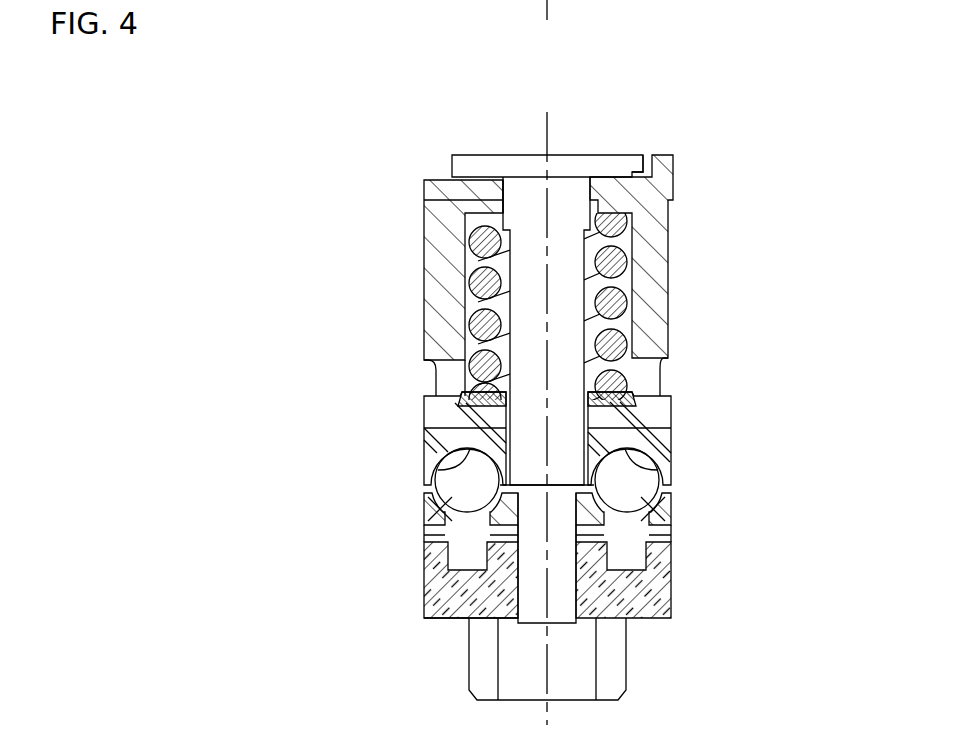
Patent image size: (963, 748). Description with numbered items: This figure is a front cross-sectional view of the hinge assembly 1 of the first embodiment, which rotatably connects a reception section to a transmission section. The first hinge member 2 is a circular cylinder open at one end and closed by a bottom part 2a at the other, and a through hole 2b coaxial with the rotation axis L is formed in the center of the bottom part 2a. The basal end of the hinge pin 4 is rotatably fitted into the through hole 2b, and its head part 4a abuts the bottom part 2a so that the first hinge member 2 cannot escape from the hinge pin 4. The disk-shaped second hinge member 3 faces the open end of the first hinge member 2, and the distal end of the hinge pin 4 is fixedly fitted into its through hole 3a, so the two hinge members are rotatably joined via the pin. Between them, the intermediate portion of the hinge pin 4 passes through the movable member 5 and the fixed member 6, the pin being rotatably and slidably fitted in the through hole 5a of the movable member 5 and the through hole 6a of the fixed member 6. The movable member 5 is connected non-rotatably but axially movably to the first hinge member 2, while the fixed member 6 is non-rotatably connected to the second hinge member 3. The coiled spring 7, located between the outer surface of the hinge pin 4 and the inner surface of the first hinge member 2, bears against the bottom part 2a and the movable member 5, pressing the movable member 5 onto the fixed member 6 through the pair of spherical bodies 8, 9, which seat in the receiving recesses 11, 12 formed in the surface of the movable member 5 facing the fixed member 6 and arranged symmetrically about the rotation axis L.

The hinge assembly 1 is at (674, 228).
The first hinge member 2 is at (412, 263).
The bottom part 2a is at (493, 205).
The through hole 2b is at (424, 200).
The second hinge member 3 is at (412, 573).
The through hole 3a is at (463, 596).
The hinge pin 4 is at (507, 145).
The head part 4a is at (620, 155).
The movable member 5 is at (684, 424).
The through hole 5a is at (427, 429).
The fixed member 6 is at (684, 519).
The through hole 6a is at (440, 537).
The coiled spring 7 is at (611, 305).
The spherical body 8 is at (427, 510).
The spherical body 9 is at (668, 505).
The receiving recess 11 is at (435, 470).
The receiving recess 12 is at (668, 472).
The rotation axis L is at (548, 130).